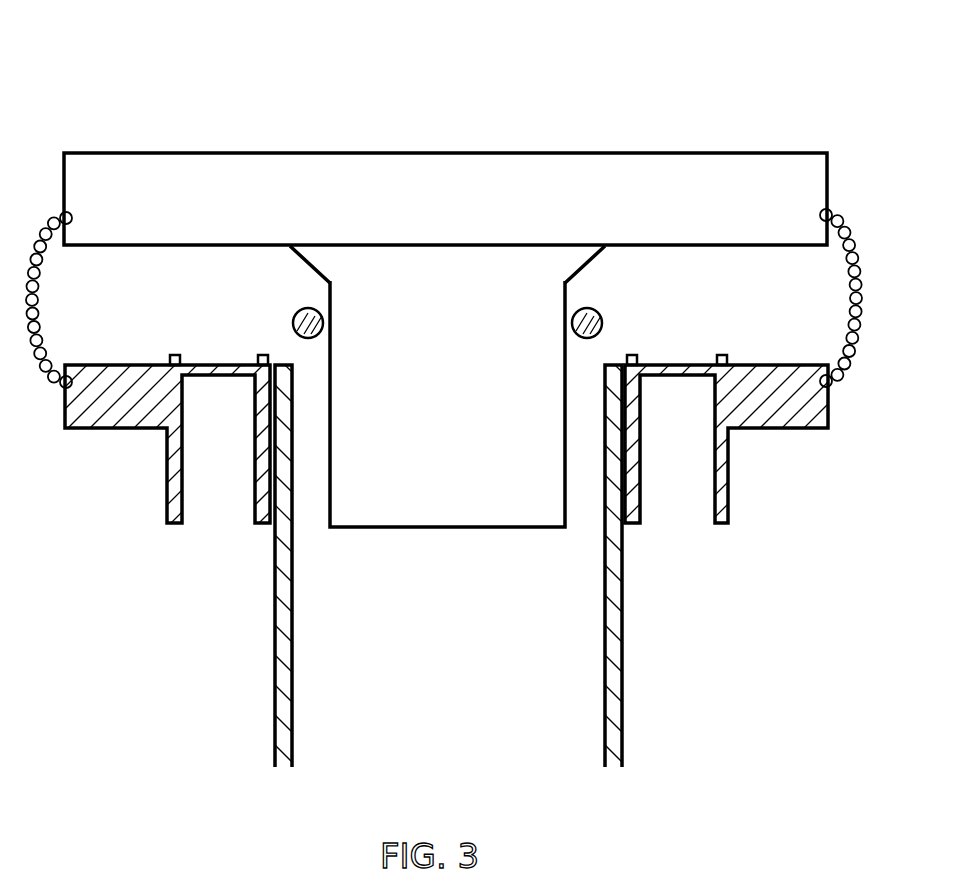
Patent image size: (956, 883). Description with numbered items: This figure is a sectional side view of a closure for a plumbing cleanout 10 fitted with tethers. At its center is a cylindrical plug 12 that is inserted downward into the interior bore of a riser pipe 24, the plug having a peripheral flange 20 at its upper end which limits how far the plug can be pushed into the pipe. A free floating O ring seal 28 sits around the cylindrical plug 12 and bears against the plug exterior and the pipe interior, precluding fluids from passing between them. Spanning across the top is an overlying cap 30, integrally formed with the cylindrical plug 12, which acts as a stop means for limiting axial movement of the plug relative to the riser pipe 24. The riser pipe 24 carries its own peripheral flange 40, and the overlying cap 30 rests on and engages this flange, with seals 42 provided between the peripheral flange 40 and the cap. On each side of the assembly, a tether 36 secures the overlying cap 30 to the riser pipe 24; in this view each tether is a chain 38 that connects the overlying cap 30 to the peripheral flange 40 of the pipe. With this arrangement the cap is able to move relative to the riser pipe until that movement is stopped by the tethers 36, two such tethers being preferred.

The closure for a plumbing cleanout 10 is at (162, 98).
The cylindrical plug 12 is at (490, 510).
The peripheral flange 20 is at (568, 256).
The riser pipe 24 is at (278, 705).
The O ring seal 28 is at (335, 320).
The overlying cap 30 is at (415, 180).
The tethers 36 is at (50, 322).
The chain 38 is at (48, 352).
The peripheral flange 40 is at (790, 415).
The seals 42 is at (258, 354).